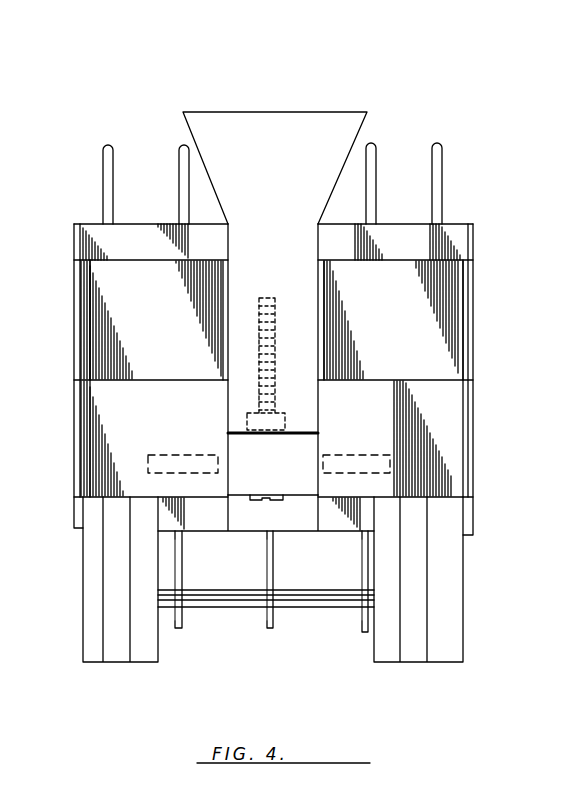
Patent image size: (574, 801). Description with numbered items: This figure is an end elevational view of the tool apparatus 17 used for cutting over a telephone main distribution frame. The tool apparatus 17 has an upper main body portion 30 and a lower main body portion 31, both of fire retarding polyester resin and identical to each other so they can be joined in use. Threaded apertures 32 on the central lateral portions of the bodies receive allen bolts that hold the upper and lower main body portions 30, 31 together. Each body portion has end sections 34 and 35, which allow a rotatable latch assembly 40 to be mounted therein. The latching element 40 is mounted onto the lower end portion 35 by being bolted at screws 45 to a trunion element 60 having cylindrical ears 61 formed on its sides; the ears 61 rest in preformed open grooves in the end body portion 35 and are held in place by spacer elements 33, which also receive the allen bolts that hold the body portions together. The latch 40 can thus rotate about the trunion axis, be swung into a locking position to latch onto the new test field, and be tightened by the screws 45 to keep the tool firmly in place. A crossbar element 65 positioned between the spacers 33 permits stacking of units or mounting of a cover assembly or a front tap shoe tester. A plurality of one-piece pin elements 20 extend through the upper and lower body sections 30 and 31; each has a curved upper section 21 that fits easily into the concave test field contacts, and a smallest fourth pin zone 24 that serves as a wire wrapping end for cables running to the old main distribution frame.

The tool apparatus 17 is at (125, 75).
The latch assembly 40 is at (267, 135).
The pin element 20 is at (171, 187).
The upper section of pin 21 is at (113, 153).
The upper main body portion 30 is at (116, 236).
The threaded apertures 32 is at (78, 318).
The end section 34 is at (158, 327).
The end section 35 is at (148, 407).
The cylindrical ears 61 is at (176, 455).
The trunion element 60 is at (284, 479).
The screws 45 is at (262, 309).
The spacer elements 33 is at (90, 604).
The lower main body portion 31 is at (294, 519).
The fourth pin zone 24 is at (266, 561).
The crossbar element 65 is at (305, 610).